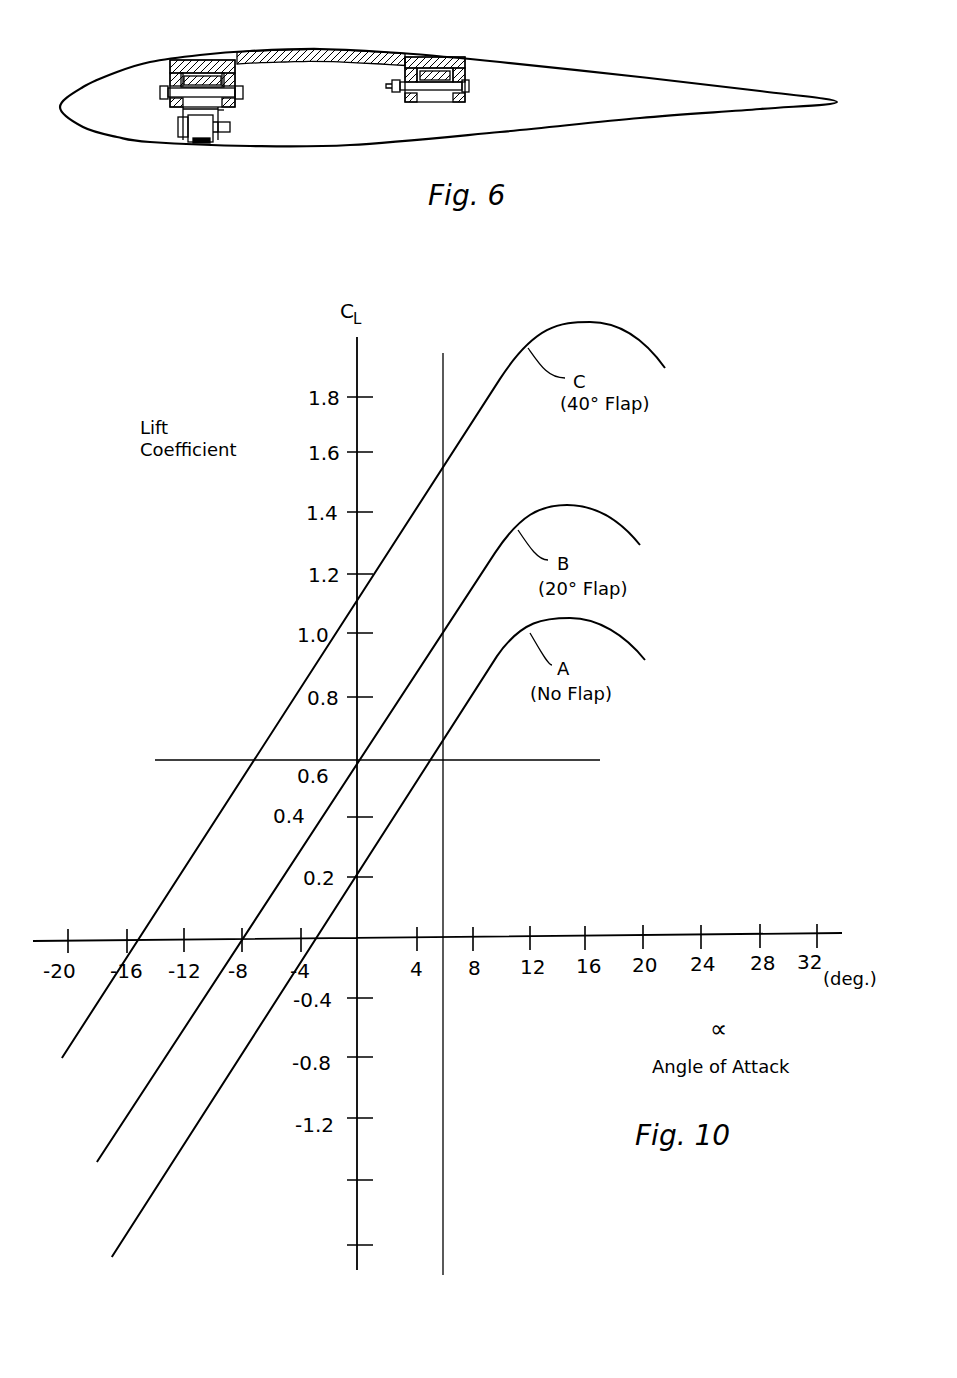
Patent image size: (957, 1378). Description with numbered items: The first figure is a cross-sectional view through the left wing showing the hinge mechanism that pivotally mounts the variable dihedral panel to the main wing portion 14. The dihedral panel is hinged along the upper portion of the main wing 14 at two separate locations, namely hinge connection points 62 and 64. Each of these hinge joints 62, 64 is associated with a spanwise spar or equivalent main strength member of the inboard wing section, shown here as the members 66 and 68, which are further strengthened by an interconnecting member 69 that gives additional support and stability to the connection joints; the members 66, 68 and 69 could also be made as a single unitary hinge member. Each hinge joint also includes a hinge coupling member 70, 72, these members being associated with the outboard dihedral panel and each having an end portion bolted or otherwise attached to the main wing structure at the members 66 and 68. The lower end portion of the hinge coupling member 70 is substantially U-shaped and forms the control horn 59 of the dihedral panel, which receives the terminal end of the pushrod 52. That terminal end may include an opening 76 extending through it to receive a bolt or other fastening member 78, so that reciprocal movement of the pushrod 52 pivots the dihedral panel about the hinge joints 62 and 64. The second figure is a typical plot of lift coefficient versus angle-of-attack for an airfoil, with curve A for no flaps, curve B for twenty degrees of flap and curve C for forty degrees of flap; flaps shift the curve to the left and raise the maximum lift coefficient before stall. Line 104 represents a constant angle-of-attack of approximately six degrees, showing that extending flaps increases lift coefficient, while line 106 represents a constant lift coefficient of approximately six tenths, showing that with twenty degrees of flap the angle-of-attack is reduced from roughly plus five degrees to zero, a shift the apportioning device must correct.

In FIG. 6, the main wing portion 14 is at (702, 81).
In FIG. 6, the pushrod 52 is at (207, 147).
In FIG. 6, the control horn 59 is at (222, 110).
In FIG. 6, the hinge connection point 62 is at (259, 94).
In FIG. 6, the hinge connection point 64 is at (484, 96).
In FIG. 6, the main strength member 66 is at (193, 62).
In FIG. 6, the main strength member 68 is at (436, 63).
In FIG. 6, the interconnecting member 69 is at (384, 54).
In FIG. 6, the hinge coupling member 70 is at (183, 108).
In FIG. 6, the hinge coupling member 72 is at (432, 100).
In FIG. 6, the opening 76 is at (185, 143).
In FIG. 6, the fastening member 78 is at (178, 126).
In FIG. 10, the constant angle-of-attack line 104 is at (446, 1175).
In FIG. 10, the constant lift coefficient line 106 is at (182, 758).